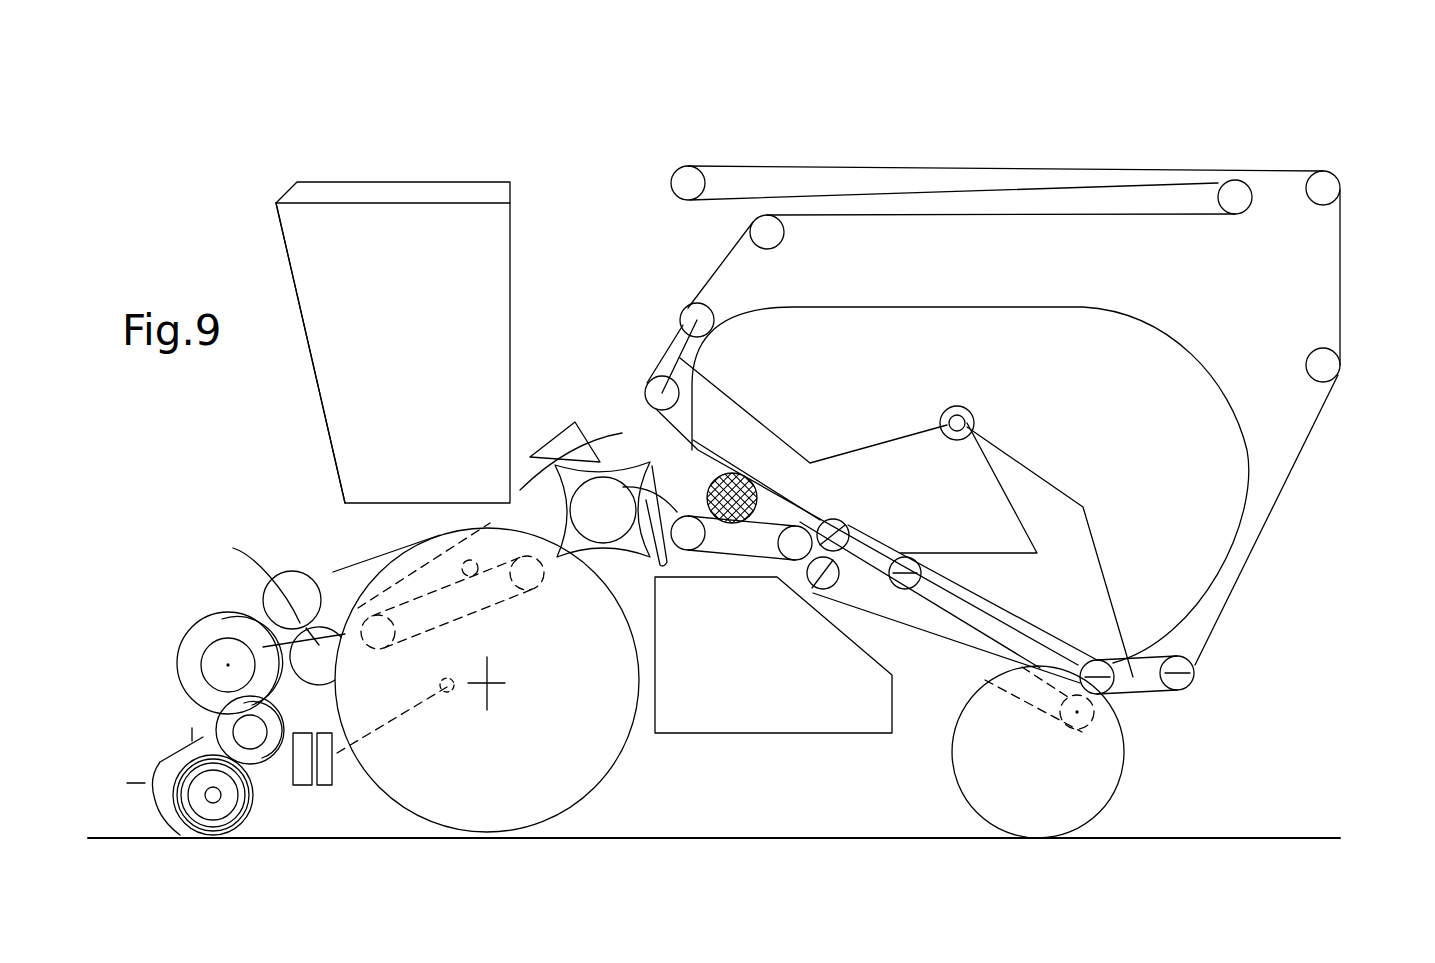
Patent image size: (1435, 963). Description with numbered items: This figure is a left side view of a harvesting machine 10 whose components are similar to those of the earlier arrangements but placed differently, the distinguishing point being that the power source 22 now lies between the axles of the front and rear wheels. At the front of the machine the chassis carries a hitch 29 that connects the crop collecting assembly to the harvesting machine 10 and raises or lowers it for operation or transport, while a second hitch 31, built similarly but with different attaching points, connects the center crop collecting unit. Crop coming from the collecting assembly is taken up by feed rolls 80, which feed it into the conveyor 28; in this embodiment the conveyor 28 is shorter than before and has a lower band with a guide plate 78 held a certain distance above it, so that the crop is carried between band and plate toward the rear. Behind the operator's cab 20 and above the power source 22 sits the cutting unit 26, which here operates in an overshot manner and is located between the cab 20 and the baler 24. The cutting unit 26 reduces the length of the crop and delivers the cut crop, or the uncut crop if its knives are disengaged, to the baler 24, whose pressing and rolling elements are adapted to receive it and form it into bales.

The harvesting machine 10 is at (1331, 697).
The operator's cab 20 is at (403, 357).
The power source 22 is at (800, 708).
The baler 24 is at (1005, 141).
The cutting unit 26 is at (618, 405).
The conveyor 28 is at (521, 639).
The hitch 29 is at (402, 717).
The hitch 31 is at (428, 583).
The guide plate 78 is at (363, 563).
The feed rolls 80 is at (262, 600).